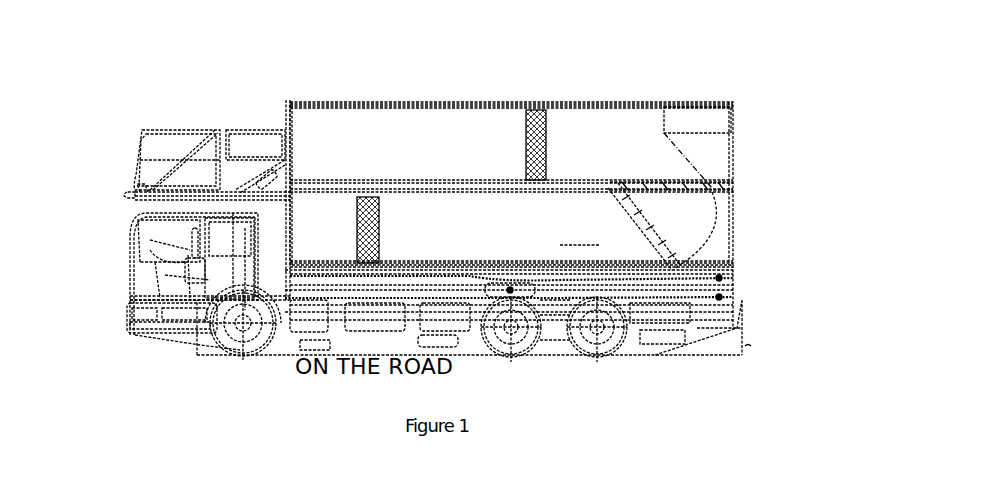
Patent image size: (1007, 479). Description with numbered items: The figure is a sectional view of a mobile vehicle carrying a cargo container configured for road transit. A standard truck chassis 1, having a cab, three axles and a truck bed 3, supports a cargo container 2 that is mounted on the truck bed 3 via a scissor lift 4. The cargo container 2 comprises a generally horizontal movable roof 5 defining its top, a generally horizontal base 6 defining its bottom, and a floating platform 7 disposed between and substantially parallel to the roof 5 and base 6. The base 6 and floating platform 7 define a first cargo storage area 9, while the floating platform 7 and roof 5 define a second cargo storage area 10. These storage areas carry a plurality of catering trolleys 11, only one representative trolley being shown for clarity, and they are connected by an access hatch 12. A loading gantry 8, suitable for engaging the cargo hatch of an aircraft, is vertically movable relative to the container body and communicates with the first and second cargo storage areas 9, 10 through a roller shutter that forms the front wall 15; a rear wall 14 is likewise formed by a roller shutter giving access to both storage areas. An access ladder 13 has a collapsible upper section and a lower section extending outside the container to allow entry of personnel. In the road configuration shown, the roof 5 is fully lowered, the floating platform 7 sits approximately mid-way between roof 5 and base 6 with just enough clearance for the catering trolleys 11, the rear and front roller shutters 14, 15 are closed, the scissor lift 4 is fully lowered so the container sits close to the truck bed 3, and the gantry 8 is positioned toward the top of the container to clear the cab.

The truck chassis 1 is at (148, 341).
The cargo container 2 is at (435, 108).
The truck bed 3 is at (723, 298).
The scissor lift 4 is at (723, 279).
The movable roof 5 is at (585, 100).
The base 6 is at (470, 262).
The floating platform 7 is at (445, 178).
The loading gantry 8 is at (195, 125).
The first cargo storage area 9 is at (570, 245).
The second cargo storage area 10 is at (368, 128).
The catering trolleys 11 is at (381, 232).
The access hatch 12 is at (680, 177).
The access ladder 13 is at (668, 237).
The rear wall 14 is at (735, 120).
The front wall 15 is at (289, 150).